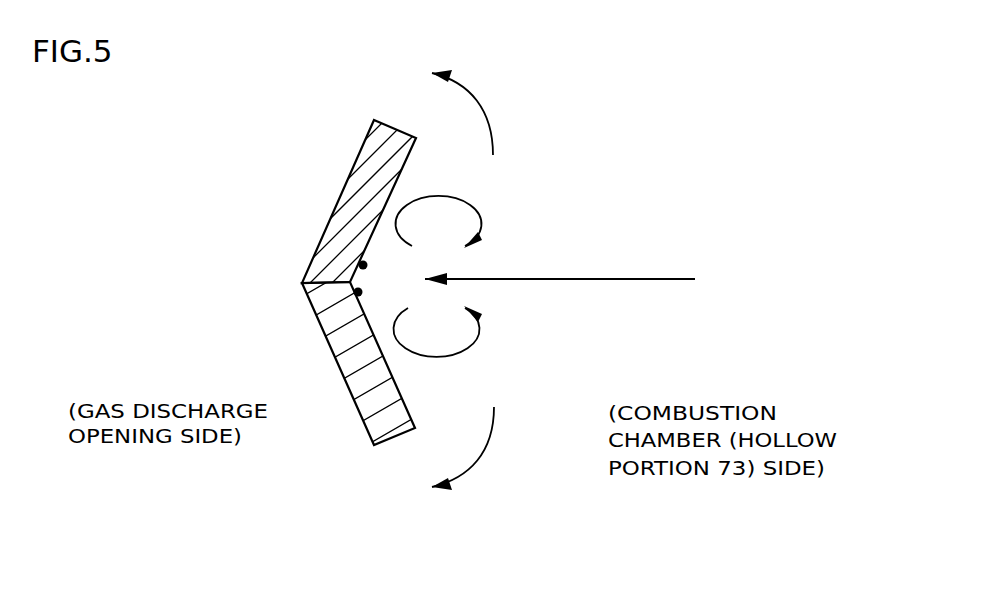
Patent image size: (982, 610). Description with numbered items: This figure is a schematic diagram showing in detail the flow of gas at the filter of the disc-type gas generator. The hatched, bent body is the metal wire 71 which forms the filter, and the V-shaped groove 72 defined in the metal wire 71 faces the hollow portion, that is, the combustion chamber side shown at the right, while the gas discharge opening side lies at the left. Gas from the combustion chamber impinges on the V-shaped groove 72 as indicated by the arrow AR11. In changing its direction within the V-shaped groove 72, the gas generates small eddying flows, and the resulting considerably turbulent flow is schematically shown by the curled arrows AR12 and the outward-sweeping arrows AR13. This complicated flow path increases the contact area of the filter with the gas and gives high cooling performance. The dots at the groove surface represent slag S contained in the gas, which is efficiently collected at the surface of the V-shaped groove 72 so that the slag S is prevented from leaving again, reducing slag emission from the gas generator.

The metal wire 71 is at (377, 167).
The V-shaped groove 72 is at (377, 316).
The slag S is at (363, 265).
The arrow indicating gas impinging on the V-shaped groove AR11 is at (627, 279).
The arrow indicating turbulent flow of gas AR12 is at (480, 213).
The arrow indicating turbulent flow of gas AR13 is at (485, 108).